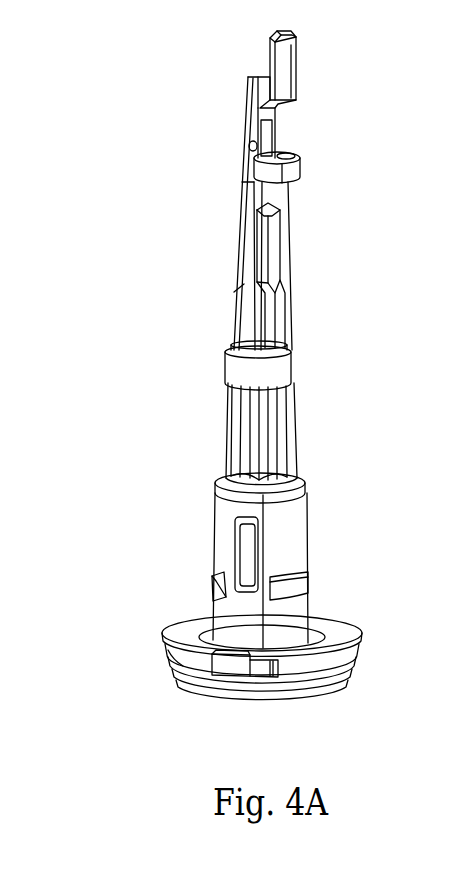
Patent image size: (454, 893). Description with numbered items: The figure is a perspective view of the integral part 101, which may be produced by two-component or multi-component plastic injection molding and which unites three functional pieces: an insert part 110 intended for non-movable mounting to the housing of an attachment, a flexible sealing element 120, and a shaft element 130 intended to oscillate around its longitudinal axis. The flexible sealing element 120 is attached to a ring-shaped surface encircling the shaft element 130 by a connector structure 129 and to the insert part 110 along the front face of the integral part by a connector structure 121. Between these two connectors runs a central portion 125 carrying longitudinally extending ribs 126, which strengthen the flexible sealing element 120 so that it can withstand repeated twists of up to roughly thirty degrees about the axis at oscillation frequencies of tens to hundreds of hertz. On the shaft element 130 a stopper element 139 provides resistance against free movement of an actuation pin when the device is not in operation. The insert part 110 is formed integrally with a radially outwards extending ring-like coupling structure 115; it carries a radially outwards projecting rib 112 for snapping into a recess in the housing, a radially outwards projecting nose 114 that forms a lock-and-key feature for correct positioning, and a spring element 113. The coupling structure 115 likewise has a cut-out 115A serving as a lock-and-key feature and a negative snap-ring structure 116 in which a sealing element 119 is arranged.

The integral part 101 is at (104, 167).
The insert part 110 is at (323, 528).
The radially outwards projecting rib 112 is at (310, 586).
The spring element 113 is at (246, 548).
The radially outwards projecting nose 114 is at (211, 606).
The ring-like coupling structure 115 is at (358, 630).
The cut-out 115A is at (262, 668).
The negative snap-ring structure 116 is at (165, 653).
The sealing element 119 is at (355, 663).
The flexible sealing element 120 is at (338, 403).
The connector structure 121 is at (308, 488).
The central portion 125 is at (226, 431).
The longitudinally extending ribs 126 is at (264, 411).
The connector structure 129 is at (303, 352).
The shaft element 130 is at (308, 266).
The stopper element 139 is at (272, 212).